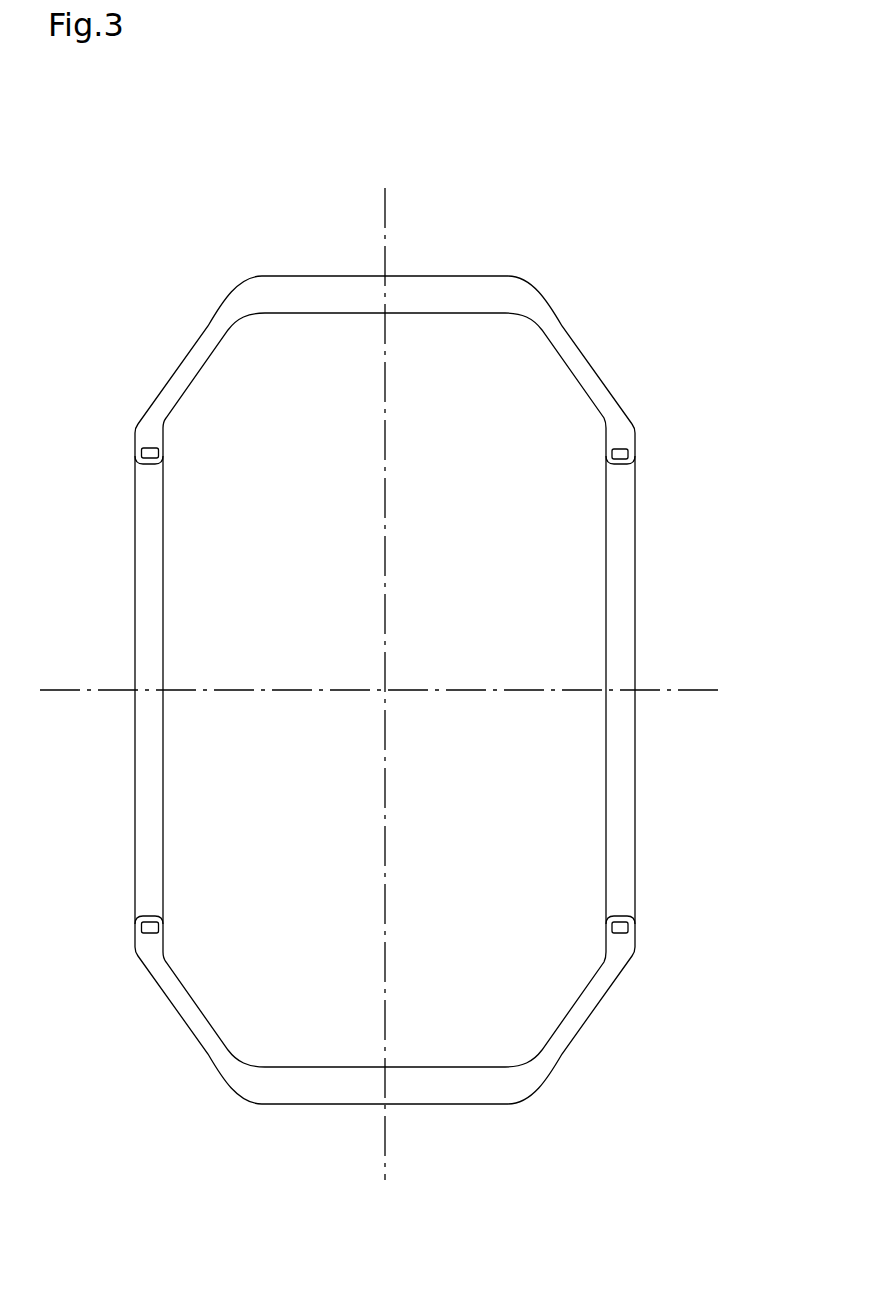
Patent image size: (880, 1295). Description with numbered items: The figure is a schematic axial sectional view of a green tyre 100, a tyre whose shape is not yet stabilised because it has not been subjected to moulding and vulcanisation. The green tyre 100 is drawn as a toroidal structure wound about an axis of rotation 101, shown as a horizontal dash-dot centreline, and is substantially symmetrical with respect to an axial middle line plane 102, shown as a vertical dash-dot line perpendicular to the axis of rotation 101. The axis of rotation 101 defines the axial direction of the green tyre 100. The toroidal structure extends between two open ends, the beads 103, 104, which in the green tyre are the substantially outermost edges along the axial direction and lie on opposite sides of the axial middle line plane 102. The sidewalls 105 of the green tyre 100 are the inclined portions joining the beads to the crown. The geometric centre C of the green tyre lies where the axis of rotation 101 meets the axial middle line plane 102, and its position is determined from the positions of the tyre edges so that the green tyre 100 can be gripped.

The green tyre 100 is at (382, 613).
The axis of rotation 101 is at (710, 692).
The axial middle line plane 102 is at (385, 212).
The bead 103 is at (135, 447).
The bead 104 is at (635, 447).
The sidewalls 105 is at (197, 347).
The geometric centre C is at (385, 690).